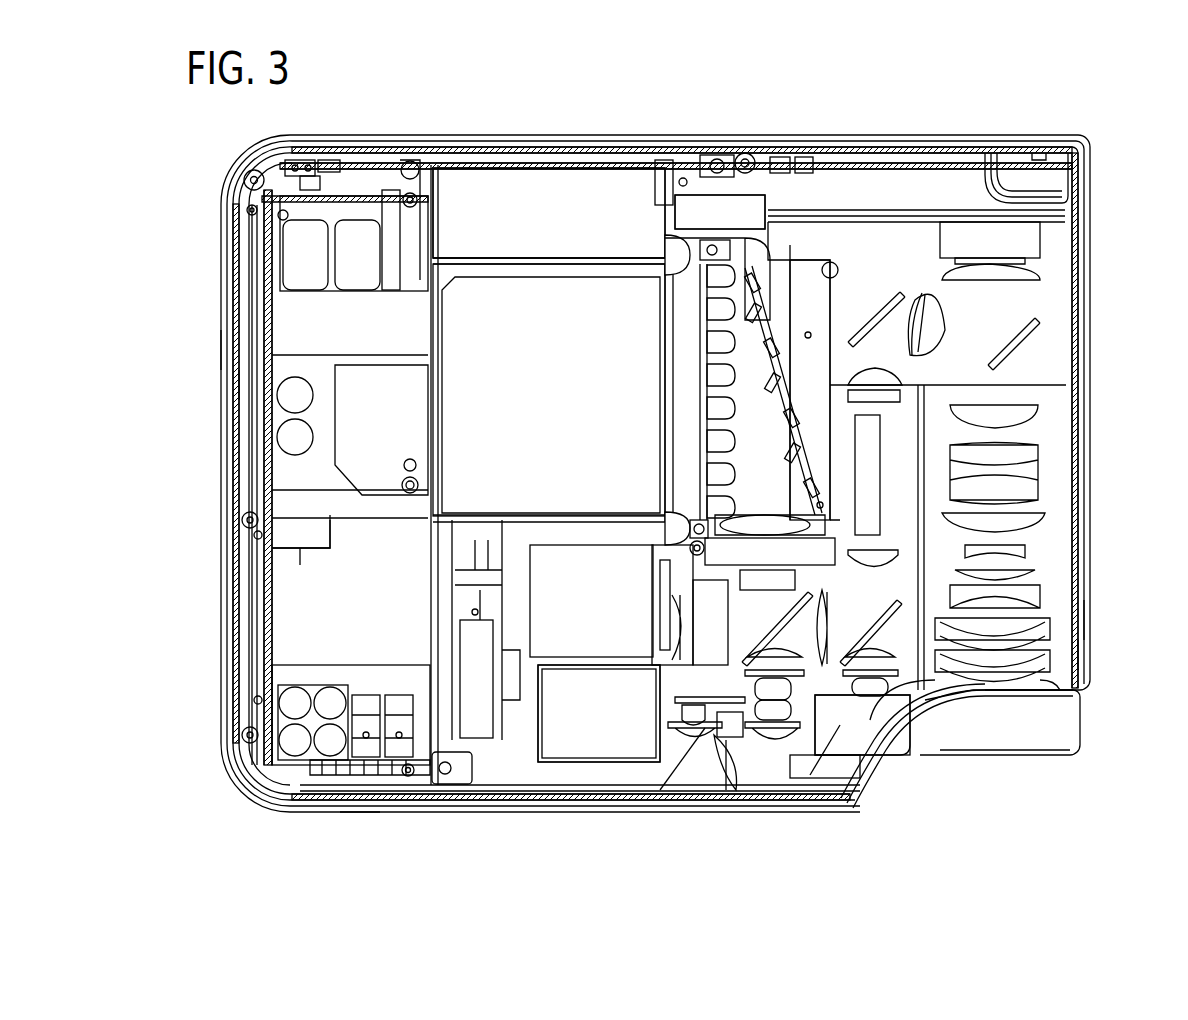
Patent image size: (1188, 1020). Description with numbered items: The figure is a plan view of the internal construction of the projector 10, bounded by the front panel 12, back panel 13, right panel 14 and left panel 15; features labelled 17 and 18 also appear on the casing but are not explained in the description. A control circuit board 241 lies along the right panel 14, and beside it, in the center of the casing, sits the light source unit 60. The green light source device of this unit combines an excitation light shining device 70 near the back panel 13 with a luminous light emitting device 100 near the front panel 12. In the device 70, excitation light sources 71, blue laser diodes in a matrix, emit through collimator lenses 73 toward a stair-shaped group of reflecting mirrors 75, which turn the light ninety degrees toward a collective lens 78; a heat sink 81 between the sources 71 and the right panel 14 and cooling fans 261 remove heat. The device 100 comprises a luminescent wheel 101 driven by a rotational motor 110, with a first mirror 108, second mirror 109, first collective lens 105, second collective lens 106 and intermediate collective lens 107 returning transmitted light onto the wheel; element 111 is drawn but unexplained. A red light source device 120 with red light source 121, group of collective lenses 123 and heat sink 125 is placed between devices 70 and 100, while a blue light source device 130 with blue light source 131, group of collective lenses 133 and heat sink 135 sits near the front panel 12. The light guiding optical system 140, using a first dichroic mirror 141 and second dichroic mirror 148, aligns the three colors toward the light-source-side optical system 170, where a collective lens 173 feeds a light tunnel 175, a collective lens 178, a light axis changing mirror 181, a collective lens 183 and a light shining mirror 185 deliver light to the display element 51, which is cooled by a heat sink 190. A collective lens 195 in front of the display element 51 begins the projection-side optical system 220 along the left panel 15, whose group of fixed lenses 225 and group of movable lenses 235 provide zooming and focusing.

The projector 10 is at (1108, 135).
The front panel 12 is at (360, 800).
The back panel 13 is at (537, 168).
The right panel 14 is at (232, 348).
The left panel 15 is at (1092, 626).
The rib 17 is at (222, 384).
The heat insulating member 18 is at (498, 147).
The display element 51 is at (1028, 256).
The light source unit 60 is at (643, 447).
The excitation light shining device 70 is at (696, 268).
The excitation light sources 71 is at (718, 377).
The collimator lenses 73 is at (718, 344).
The group of reflecting mirrors 75 is at (750, 417).
The collective lens 78 is at (762, 518).
The heat sink 81 is at (578, 358).
The luminous light emitting device 100 is at (728, 740).
The luminescent wheel 101 is at (680, 715).
The first collective lens 105 is at (770, 680).
The second collective lens 106 is at (735, 735).
The intermediate collective lens 107 is at (768, 725).
The first mirror 108 is at (815, 770).
The second mirror 109 is at (690, 740).
The rotational motor 110 is at (726, 760).
The holder block 111 is at (845, 745).
The red light source device 120 is at (580, 720).
The red light source 121 is at (668, 640).
The group of collective lenses 123 is at (672, 612).
The heat sink 125 is at (565, 609).
The blue light source device 130 is at (895, 765).
The blue light source 131 is at (925, 735).
The group of collective lenses 133 is at (905, 640).
The heat sink 135 is at (900, 745).
The light guiding optical system 140 is at (970, 700).
The first dichroic mirror 141 is at (770, 625).
The second dichroic mirror 148 is at (870, 640).
The light-source-side optical system 170 is at (889, 275).
The collective lens 173 is at (870, 563).
The light tunnel 175 is at (870, 519).
The collective lens 178 is at (870, 384).
The light axis changing mirror 181 is at (875, 300).
The collective lens 183 is at (935, 313).
The light shining mirror 185 is at (1020, 345).
The heat sink 190 is at (960, 185).
The collective lens 195 is at (1032, 276).
The projection-side optical system 220 is at (1060, 496).
The group of fixed lenses 225 is at (1030, 690).
The group of movable lenses 235 is at (1056, 438).
The control circuit board 241 is at (330, 557).
The cooling fan 261 is at (452, 207).